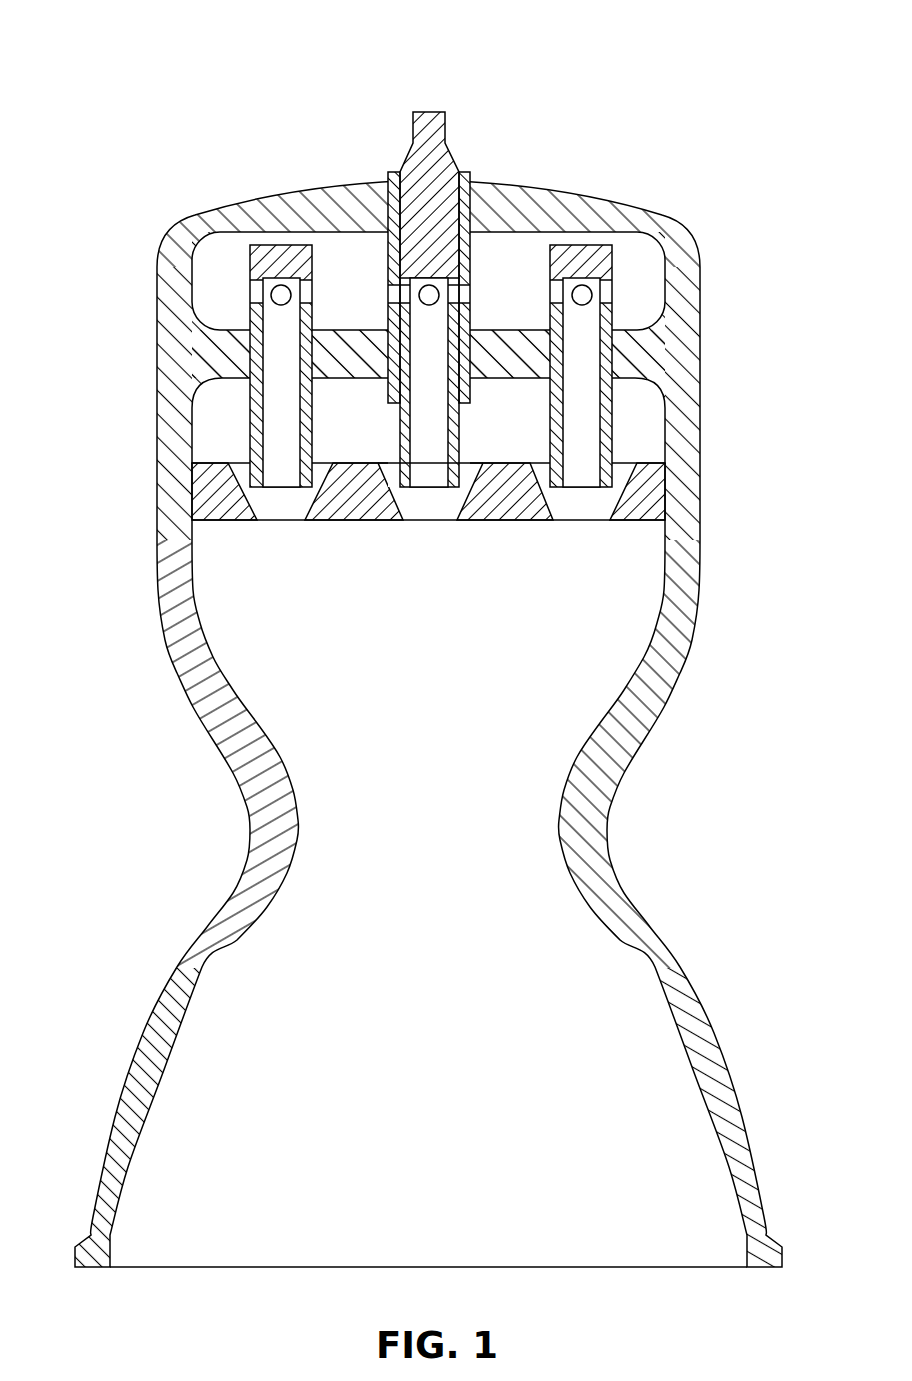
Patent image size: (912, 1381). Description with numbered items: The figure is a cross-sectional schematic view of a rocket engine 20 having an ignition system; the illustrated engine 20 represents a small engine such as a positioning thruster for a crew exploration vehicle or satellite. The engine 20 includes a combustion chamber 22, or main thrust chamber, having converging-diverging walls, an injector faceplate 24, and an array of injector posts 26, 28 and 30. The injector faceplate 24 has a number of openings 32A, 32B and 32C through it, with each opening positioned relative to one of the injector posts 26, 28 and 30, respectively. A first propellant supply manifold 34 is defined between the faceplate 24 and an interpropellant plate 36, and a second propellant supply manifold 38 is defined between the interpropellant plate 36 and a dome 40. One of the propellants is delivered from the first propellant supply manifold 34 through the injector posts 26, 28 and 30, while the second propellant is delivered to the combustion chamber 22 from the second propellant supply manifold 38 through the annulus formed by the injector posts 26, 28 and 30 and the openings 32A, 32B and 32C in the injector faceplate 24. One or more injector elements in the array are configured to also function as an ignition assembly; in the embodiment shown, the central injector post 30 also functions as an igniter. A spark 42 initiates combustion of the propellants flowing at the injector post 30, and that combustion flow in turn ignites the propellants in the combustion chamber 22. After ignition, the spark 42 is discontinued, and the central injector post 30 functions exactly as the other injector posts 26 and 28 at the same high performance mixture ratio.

The rocket engine 20 is at (172, 67).
The combustion chamber 22 is at (700, 636).
The injector faceplate 24 is at (657, 480).
The injector post 26 is at (238, 255).
The injector post 28 is at (586, 233).
The central injector post 30 is at (438, 101).
The opening 32A is at (280, 520).
The opening 32B is at (576, 520).
The opening 32C is at (422, 520).
The first propellant supply manifold 34 is at (212, 423).
The interpropellant plate 36 is at (628, 352).
The second propellant supply manifold 38 is at (337, 245).
The dome 40 is at (357, 183).
The spark 42 is at (457, 500).